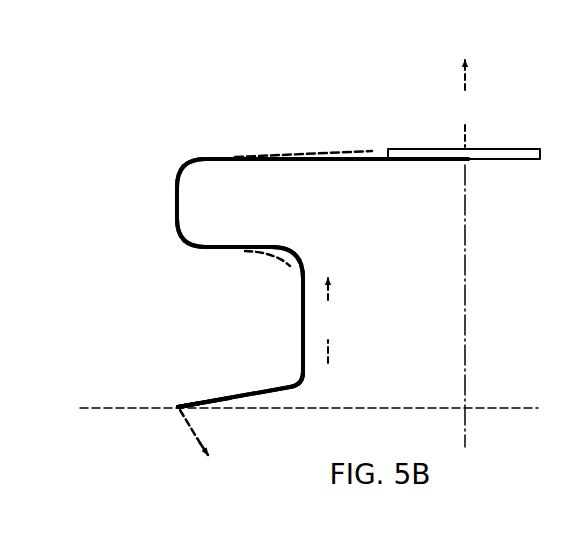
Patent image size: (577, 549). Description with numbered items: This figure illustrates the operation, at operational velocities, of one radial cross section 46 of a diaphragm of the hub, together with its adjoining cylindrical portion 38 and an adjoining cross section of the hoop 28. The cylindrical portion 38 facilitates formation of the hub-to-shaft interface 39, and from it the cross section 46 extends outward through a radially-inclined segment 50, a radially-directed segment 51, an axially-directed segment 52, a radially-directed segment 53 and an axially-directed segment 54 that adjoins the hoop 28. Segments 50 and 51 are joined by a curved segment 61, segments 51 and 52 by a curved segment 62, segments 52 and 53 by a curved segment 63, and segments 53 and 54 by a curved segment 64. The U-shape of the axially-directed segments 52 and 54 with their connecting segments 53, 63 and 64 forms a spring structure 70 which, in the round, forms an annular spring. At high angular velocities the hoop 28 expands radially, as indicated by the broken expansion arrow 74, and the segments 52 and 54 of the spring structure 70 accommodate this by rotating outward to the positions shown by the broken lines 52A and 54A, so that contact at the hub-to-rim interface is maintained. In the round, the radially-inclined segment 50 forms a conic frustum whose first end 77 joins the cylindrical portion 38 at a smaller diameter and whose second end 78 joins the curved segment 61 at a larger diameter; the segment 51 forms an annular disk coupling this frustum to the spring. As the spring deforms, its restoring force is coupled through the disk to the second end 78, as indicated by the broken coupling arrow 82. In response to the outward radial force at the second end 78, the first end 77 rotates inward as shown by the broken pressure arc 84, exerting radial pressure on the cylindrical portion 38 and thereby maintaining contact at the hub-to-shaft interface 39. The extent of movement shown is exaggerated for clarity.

The spring structure 70 is at (205, 154).
The radial cross section 46 is at (380, 167).
The hoop 28 is at (535, 146).
The expansion arrow 74 is at (464, 103).
The coupling arrow 82 is at (327, 320).
The pressure arc 84 is at (180, 426).
The broken line 54A is at (345, 150).
The broken line 52A is at (252, 258).
The curved segment 64 is at (180, 168).
The radially-directed segment 53 is at (177, 202).
The curved segment 63 is at (180, 238).
The axially-directed segment 52 is at (255, 246).
The curved segment 62 is at (298, 253).
The radially-directed segment 51 is at (302, 288).
The radially-inclined segment 50 is at (240, 395).
The second end 78 is at (285, 387).
The first end 77 is at (208, 401).
The cylindrical portion 38 is at (180, 405).
The hub-to-shaft interface 39 is at (177, 407).
The curved segment 61 is at (297, 388).
The axially-directed segment 54 is at (325, 160).